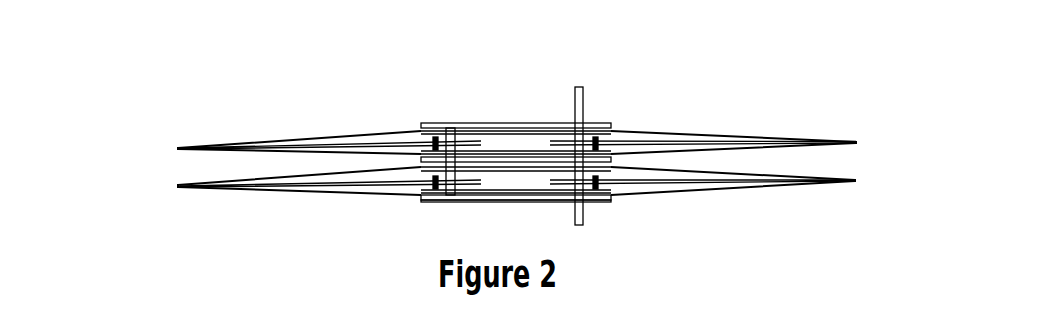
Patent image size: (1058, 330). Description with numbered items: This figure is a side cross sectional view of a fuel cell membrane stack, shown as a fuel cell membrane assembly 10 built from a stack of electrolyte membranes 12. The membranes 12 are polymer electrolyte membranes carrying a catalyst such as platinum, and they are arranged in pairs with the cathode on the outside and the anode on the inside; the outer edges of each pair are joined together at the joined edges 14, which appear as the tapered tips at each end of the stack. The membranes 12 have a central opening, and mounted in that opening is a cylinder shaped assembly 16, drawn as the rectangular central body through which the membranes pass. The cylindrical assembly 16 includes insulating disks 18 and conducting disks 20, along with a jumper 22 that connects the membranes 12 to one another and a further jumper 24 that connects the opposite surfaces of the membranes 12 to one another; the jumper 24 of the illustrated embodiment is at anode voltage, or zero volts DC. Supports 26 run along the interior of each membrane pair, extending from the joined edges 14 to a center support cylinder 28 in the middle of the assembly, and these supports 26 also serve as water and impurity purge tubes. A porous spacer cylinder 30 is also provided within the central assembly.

The fuel cell membrane assembly 10 is at (770, 69).
The electrolyte membranes 12 is at (713, 135).
The joined edges 14 is at (178, 186).
The cylinder shaped assembly 16 is at (422, 123).
The insulating disks 18 is at (452, 203).
The conducting disks 20 is at (553, 203).
The jumper 22 is at (458, 128).
The further jumper 24 is at (585, 87).
The supports 26 is at (360, 147).
The center support cylinder 28 is at (612, 133).
The porous spacer cylinder 30 is at (510, 130).